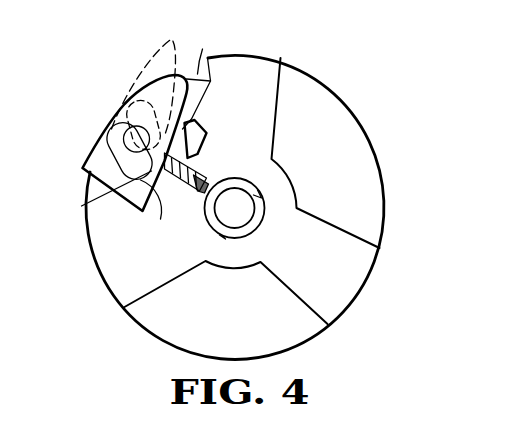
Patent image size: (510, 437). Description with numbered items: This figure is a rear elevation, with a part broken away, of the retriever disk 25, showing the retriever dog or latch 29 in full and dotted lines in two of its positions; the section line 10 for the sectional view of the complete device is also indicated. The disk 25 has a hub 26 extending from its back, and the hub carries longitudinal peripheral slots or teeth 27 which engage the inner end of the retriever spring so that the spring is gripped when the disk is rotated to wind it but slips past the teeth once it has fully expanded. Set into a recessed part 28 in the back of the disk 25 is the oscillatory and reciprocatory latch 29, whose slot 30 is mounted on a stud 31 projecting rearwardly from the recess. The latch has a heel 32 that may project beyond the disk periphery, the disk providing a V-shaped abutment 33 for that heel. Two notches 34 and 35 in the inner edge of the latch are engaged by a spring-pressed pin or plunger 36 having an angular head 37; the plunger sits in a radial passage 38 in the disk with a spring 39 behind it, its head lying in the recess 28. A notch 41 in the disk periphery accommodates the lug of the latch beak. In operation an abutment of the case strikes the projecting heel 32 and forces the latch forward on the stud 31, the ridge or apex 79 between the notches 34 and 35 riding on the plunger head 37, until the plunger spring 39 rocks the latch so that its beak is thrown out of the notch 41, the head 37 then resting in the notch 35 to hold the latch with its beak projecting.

The section line 10 is at (100, 68).
The retriever disk 25 is at (304, 258).
The hub 26 is at (254, 229).
The longitudinal peripheral slots or teeth 27 is at (226, 173).
The recessed part 28 is at (190, 128).
The dog or latch 29 is at (112, 135).
The slot 30 is at (122, 155).
The stud 31 is at (132, 141).
The heel 32 is at (97, 182).
The V-shaped abutment 33 is at (140, 205).
The notch 34 is at (163, 203).
The notch 35 is at (186, 122).
The spring-pressed pin or plunger 36 is at (193, 168).
The angular head 37 is at (197, 135).
The radial passage 38 is at (192, 193).
The spring 39 is at (206, 203).
The notch 41 is at (213, 51).
The ridge or apex 79 is at (103, 186).